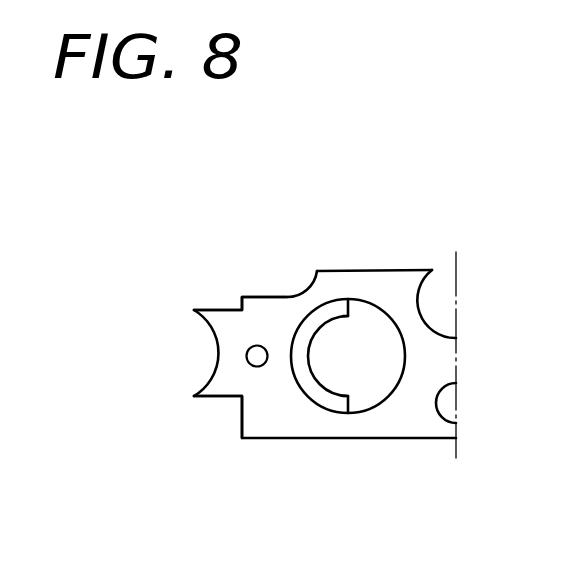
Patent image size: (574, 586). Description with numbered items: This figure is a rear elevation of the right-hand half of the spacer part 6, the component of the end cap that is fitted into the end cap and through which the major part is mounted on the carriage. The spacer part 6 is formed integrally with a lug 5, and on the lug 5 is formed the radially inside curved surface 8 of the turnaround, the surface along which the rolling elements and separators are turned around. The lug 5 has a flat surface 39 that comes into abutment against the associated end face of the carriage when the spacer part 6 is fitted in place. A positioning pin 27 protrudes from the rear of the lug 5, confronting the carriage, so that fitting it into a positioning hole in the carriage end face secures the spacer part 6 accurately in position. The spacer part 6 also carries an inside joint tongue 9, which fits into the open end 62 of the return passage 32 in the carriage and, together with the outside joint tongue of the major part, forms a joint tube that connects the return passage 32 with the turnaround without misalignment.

The lug 5 is at (228, 320).
The spacer part 6 is at (345, 270).
The radially inside curved surface 8 is at (207, 380).
The inside joint tongue 9 is at (320, 313).
The positioning pin 27 is at (255, 362).
The return passage 32 is at (338, 358).
The flat surface 39 is at (397, 285).
The open end 62 is at (369, 361).